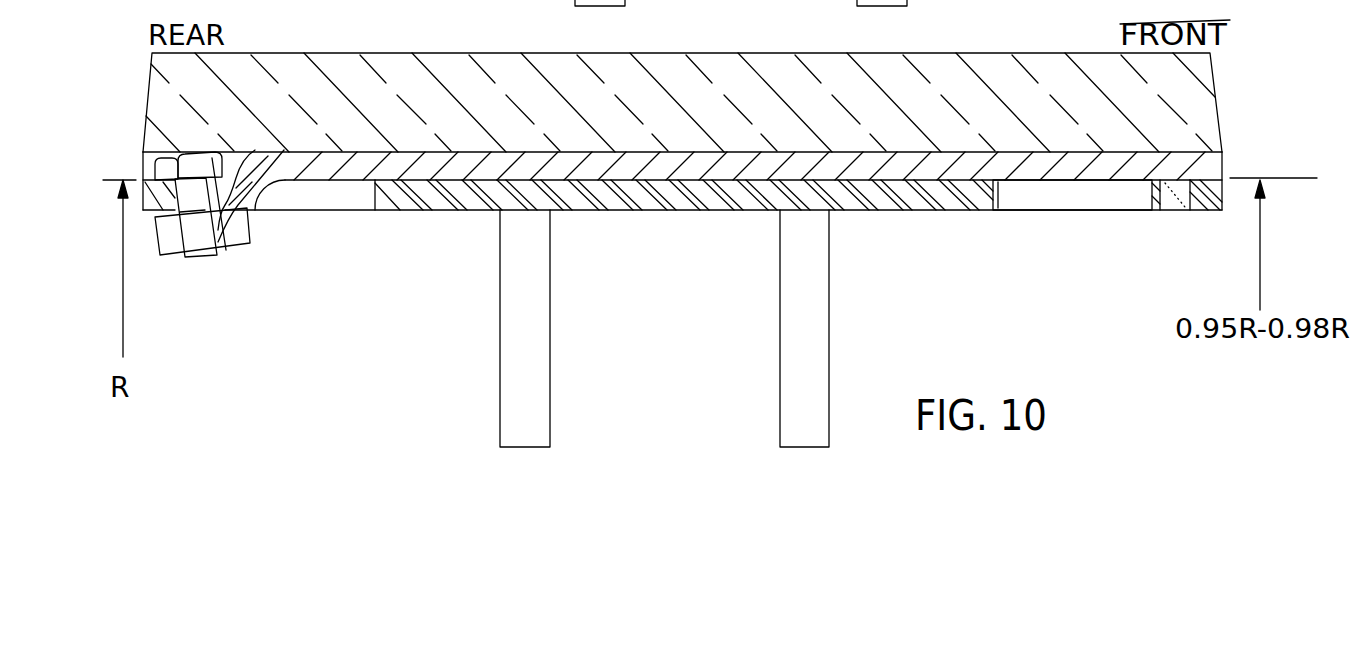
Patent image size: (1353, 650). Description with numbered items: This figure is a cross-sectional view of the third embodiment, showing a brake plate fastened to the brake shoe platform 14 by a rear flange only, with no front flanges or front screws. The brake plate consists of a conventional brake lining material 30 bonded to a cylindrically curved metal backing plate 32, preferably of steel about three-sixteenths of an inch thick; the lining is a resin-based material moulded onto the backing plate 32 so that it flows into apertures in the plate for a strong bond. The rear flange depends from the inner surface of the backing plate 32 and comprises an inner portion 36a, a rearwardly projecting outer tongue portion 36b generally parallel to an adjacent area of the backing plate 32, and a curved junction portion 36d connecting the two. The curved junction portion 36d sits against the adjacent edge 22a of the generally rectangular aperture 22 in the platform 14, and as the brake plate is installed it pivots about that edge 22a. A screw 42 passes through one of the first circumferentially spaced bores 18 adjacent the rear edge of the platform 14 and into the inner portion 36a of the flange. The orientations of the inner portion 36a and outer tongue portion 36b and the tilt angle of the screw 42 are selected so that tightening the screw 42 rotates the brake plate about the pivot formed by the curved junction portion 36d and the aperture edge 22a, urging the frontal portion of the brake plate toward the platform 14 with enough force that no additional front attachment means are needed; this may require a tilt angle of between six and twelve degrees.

The brake lining material 30 is at (422, 53).
The backing plate 32 is at (1210, 167).
The platform 14 is at (876, 210).
The aperture 22 is at (373, 203).
The first circumferentially spaced bores 18 is at (1183, 208).
The inner portion 36a is at (252, 192).
The outer tongue portion 36b is at (172, 243).
The curved junction portion 36d is at (235, 220).
The aperture edge 22a is at (218, 235).
The screw 42 is at (212, 253).